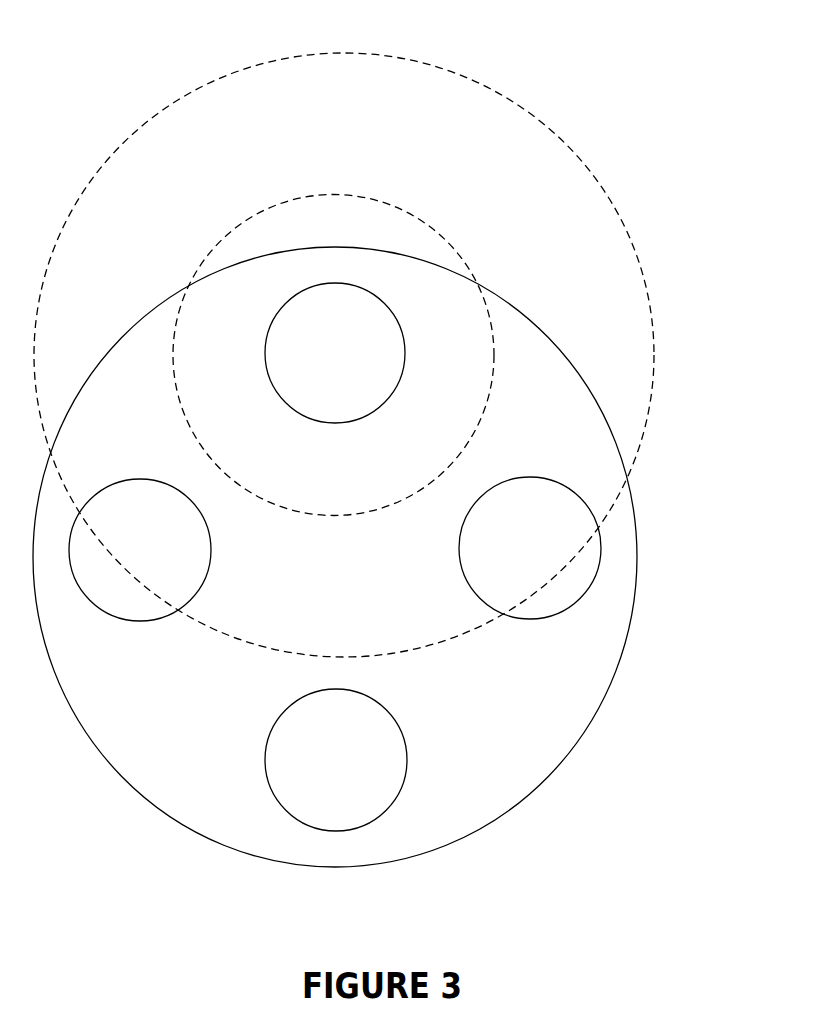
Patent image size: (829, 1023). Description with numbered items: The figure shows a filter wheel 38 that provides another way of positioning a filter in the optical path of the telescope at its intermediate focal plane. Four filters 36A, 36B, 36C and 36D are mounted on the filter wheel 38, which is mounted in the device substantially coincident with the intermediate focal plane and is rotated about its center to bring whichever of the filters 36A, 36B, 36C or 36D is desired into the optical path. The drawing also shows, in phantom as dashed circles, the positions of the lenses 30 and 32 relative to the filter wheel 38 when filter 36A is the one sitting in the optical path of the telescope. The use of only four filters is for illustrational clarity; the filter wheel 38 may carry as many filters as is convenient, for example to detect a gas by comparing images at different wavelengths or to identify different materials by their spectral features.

The lens 30 is at (545, 127).
The lens 32 is at (353, 195).
The filter 36A is at (358, 352).
The filter 36B is at (551, 547).
The filter 36C is at (358, 758).
The filter 36D is at (146, 547).
The filter wheel 38 is at (182, 707).